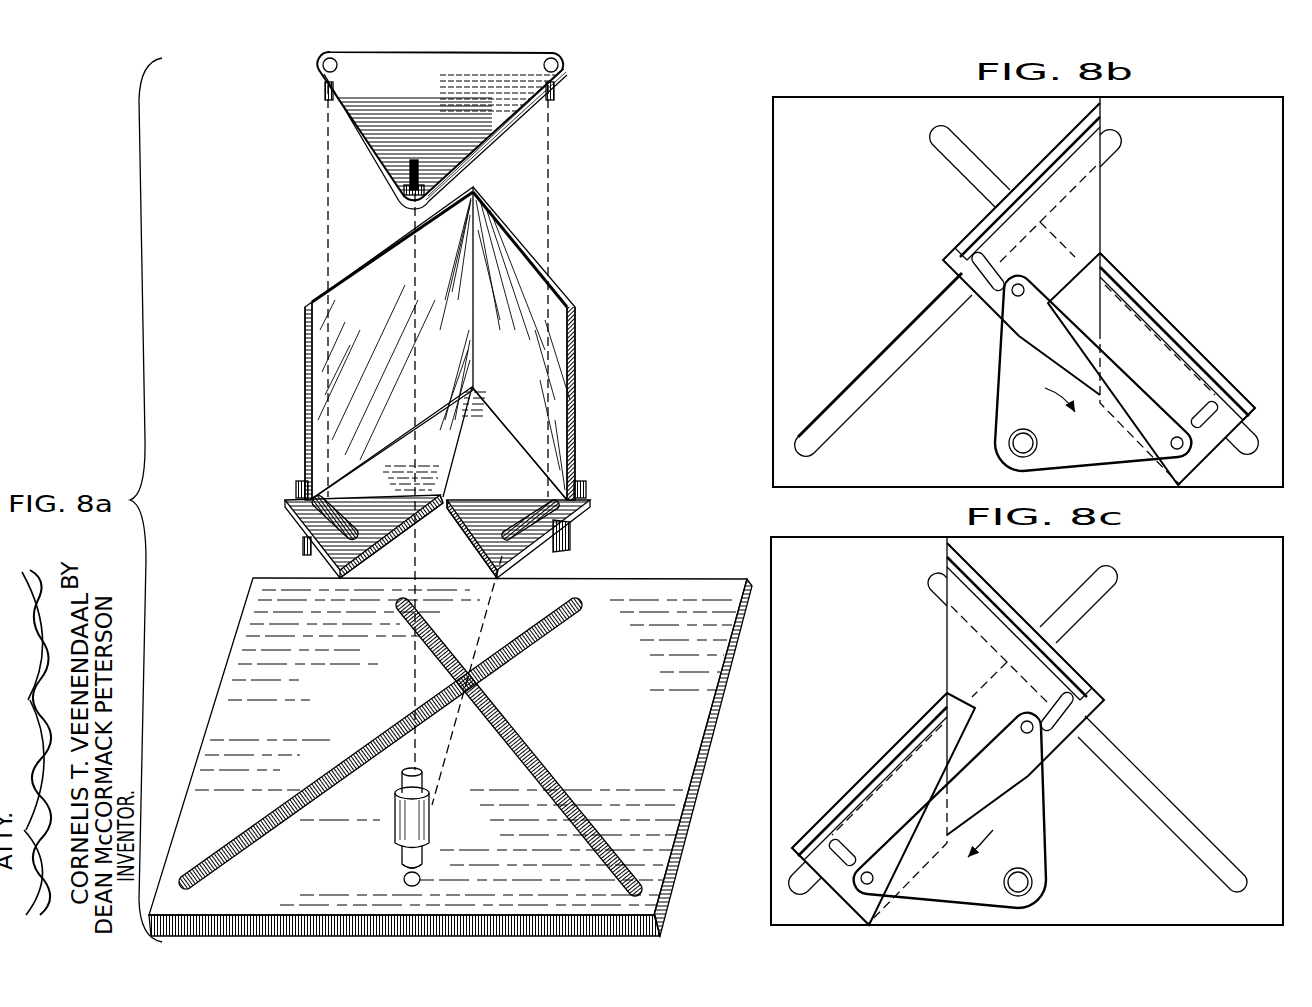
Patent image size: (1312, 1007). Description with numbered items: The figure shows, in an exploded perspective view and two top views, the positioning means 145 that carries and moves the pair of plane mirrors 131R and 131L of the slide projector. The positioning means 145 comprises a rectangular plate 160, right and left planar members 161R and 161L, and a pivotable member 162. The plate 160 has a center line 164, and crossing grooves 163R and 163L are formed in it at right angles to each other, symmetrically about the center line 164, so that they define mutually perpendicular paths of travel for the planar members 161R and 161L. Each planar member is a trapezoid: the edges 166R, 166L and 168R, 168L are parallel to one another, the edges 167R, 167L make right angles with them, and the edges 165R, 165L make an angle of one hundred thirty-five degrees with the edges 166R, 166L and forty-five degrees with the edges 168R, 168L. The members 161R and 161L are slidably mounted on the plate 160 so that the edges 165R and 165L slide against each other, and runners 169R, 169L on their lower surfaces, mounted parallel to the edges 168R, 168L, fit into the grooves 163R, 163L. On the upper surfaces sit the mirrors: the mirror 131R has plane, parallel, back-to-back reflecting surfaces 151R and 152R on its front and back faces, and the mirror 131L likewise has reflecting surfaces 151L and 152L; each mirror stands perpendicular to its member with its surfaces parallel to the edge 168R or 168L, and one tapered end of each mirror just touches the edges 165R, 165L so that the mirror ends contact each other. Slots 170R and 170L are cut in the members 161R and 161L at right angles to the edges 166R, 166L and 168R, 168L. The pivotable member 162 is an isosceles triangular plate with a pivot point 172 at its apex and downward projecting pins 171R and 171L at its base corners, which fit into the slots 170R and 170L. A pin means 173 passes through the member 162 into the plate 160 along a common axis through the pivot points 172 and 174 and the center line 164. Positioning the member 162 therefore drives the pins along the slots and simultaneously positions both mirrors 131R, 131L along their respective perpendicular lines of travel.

In FIG. 8A, the left plane mirror 131L is at (372, 253).
In FIG. 8B, the left plane mirror 131L is at (1060, 165).
In FIG. 8C, the left plane mirror 131L is at (912, 732).
In FIG. 8A, the right plane mirror 131R is at (535, 252).
In FIG. 8B, the right plane mirror 131R is at (1150, 312).
In FIG. 8C, the right plane mirror 131R is at (998, 602).
In FIG. 8A, the positioning means 145 is at (400, 568).
In FIG. 8B, the positioning means 145 is at (1112, 238).
In FIG. 8C, the positioning means 145 is at (938, 648).
In FIG. 8A, the front reflecting surface of left mirror 151L is at (305, 398).
In FIG. 8A, the front reflecting surface of right mirror 151R is at (575, 398).
In FIG. 8A, the back reflecting surface of left mirror 152L is at (311, 325).
In FIG. 8A, the back reflecting surface of right mirror 152R is at (575, 325).
In FIG. 8A, the rectangular plate 160 is at (280, 632).
In FIG. 8B, the rectangular plate 160 is at (780, 124).
In FIG. 8C, the rectangular plate 160 is at (782, 555).
In FIG. 8A, the left planar member 161L is at (292, 498).
In FIG. 8B, the left planar member 161L is at (1083, 213).
In FIG. 8C, the left planar member 161L is at (855, 785).
In FIG. 8A, the right planar member 161R is at (588, 499).
In FIG. 8B, the right planar member 161R is at (1243, 386).
In FIG. 8C, the right planar member 161R is at (1080, 690).
In FIG. 8A, the pivotable member 162 is at (492, 122).
In FIG. 8B, the pivotable member 162 is at (1010, 390).
In FIG. 8C, the pivotable member 162 is at (1032, 816).
In FIG. 8A, the left groove 163L is at (544, 642).
In FIG. 8B, the left groove 163L is at (897, 333).
In FIG. 8C, the left groove 163L is at (1082, 598).
In FIG. 8A, the right groove 163R is at (444, 625).
In FIG. 8B, the right groove 163R is at (963, 160).
In FIG. 8C, the right groove 163R is at (1160, 795).
In FIG. 8A, the center line of plate 164 is at (395, 942).
In FIG. 8A, the sliding edge of left planar member 165L is at (452, 425).
In FIG. 8A, the sliding edge of right planar member 165R is at (455, 452).
In FIG. 8A, the edge of left planar member 166L is at (398, 532).
In FIG. 8A, the edge of right planar member 166R is at (470, 548).
In FIG. 8A, the edge of left planar member 167L is at (330, 566).
In FIG. 8A, the edge of right planar member 167R is at (520, 568).
In FIG. 8A, the edge of left planar member 168L is at (302, 485).
In FIG. 8A, the edge of right planar member 168R is at (582, 485).
In FIG. 8A, the left runner 169L is at (300, 542).
In FIG. 8A, the right runner 169R is at (572, 538).
In FIG. 8A, the left slot 170L is at (335, 521).
In FIG. 8B, the left slot 170L is at (995, 284).
In FIG. 8C, the left slot 170L is at (842, 866).
In FIG. 8A, the right slot 170R is at (540, 522).
In FIG. 8B, the right slot 170R is at (1170, 428).
In FIG. 8C, the right slot 170R is at (1068, 702).
In FIG. 8A, the left downward projecting pin 171L is at (318, 102).
In FIG. 8B, the left downward projecting pin 171L is at (1021, 298).
In FIG. 8C, the left downward projecting pin 171L is at (872, 872).
In FIG. 8A, the right downward projecting pin 171R is at (560, 100).
In FIG. 8B, the right downward projecting pin 171R is at (1190, 452).
In FIG. 8C, the right downward projecting pin 171R is at (1034, 735).
In FIG. 8A, the pivot point 172 is at (413, 160).
In FIG. 8A, the pin means 173 is at (400, 814).
In FIG. 8B, the pin means 173 is at (1008, 446).
In FIG. 8C, the pin means 173 is at (1034, 882).
In FIG. 8A, the pivot point 174 is at (410, 873).